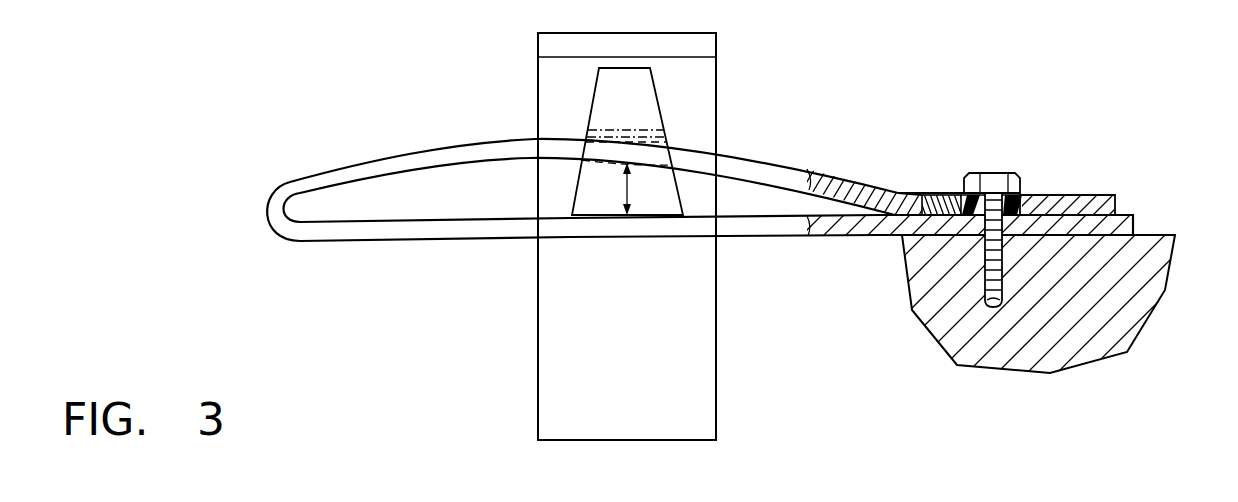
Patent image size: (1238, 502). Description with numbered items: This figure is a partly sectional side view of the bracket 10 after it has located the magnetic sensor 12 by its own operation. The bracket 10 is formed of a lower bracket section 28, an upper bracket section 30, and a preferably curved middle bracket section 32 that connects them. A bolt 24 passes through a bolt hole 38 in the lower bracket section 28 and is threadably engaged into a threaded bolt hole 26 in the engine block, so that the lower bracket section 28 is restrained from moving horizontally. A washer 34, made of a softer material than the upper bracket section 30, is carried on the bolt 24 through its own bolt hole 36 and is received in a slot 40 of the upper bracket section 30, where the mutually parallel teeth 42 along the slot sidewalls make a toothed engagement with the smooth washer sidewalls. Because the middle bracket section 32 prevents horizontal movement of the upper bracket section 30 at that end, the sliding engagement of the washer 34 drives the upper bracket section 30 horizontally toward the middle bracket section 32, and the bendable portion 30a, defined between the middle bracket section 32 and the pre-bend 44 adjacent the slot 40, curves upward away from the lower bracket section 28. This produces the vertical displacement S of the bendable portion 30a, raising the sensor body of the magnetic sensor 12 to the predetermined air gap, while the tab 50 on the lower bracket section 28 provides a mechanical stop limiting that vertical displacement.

The bracket 10 is at (994, 236).
The magnetic sensor 12 is at (716, 88).
The bolt 24 is at (1016, 182).
The threaded bolt hole 26 is at (988, 310).
The lower bracket section 28 is at (728, 275).
The upper bracket section 30 is at (627, 129).
The bendable portion 30a is at (437, 148).
The middle bracket section 32 is at (268, 208).
The washer 34 is at (950, 195).
The bolt hole 36 is at (1027, 190).
The bolt hole 38 is at (1005, 246).
The slot 40 is at (940, 196).
The teeth 42 is at (900, 222).
The pre-bend 44 is at (898, 193).
The tab 50 is at (583, 107).
The vertical displacement S is at (627, 190).